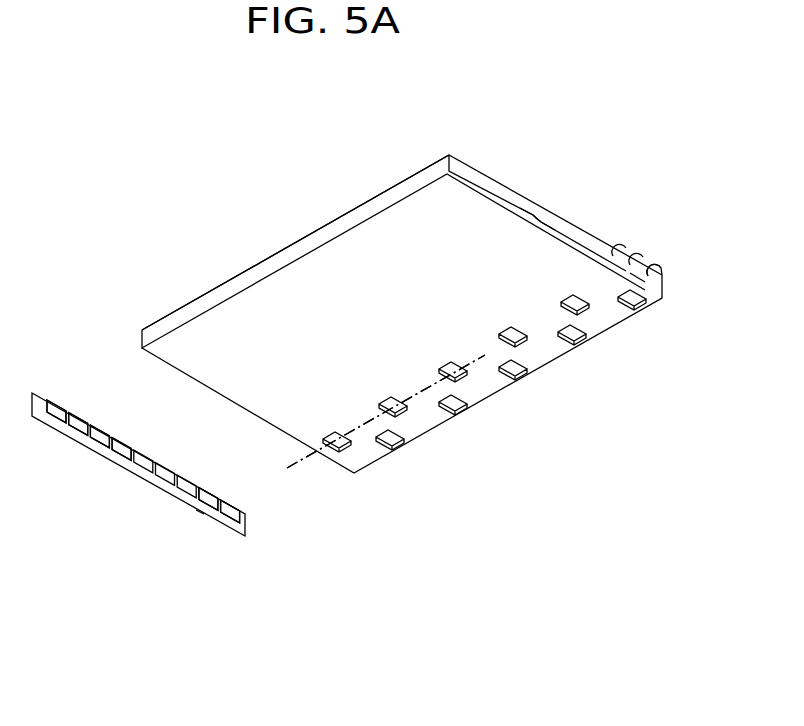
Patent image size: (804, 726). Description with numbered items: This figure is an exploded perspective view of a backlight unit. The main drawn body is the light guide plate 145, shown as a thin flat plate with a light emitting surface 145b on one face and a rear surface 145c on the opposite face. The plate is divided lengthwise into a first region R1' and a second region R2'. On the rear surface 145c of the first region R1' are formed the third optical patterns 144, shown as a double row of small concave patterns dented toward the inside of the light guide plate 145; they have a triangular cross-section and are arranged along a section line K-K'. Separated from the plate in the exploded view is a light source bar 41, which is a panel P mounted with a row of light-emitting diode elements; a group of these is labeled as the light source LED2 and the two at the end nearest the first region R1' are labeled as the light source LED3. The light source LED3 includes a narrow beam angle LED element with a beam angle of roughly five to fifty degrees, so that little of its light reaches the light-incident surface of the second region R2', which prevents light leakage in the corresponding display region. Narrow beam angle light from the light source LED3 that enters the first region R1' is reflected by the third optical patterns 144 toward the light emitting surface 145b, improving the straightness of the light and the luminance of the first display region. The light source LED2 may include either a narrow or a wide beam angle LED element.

The third optical patterns 144 is at (575, 343).
The light guide plate 145 is at (347, 222).
The rear surface 145c is at (428, 203).
The light emitting surface 145b is at (617, 250).
The first region R1' is at (659, 257).
The second region R2' is at (541, 206).
The section line K is at (386, 431).
The section line K' is at (420, 411).
The LED bar 41 is at (86, 497).
The second light source LED2 is at (49, 426).
The light source LED3 is at (204, 513).
The panel P is at (200, 512).